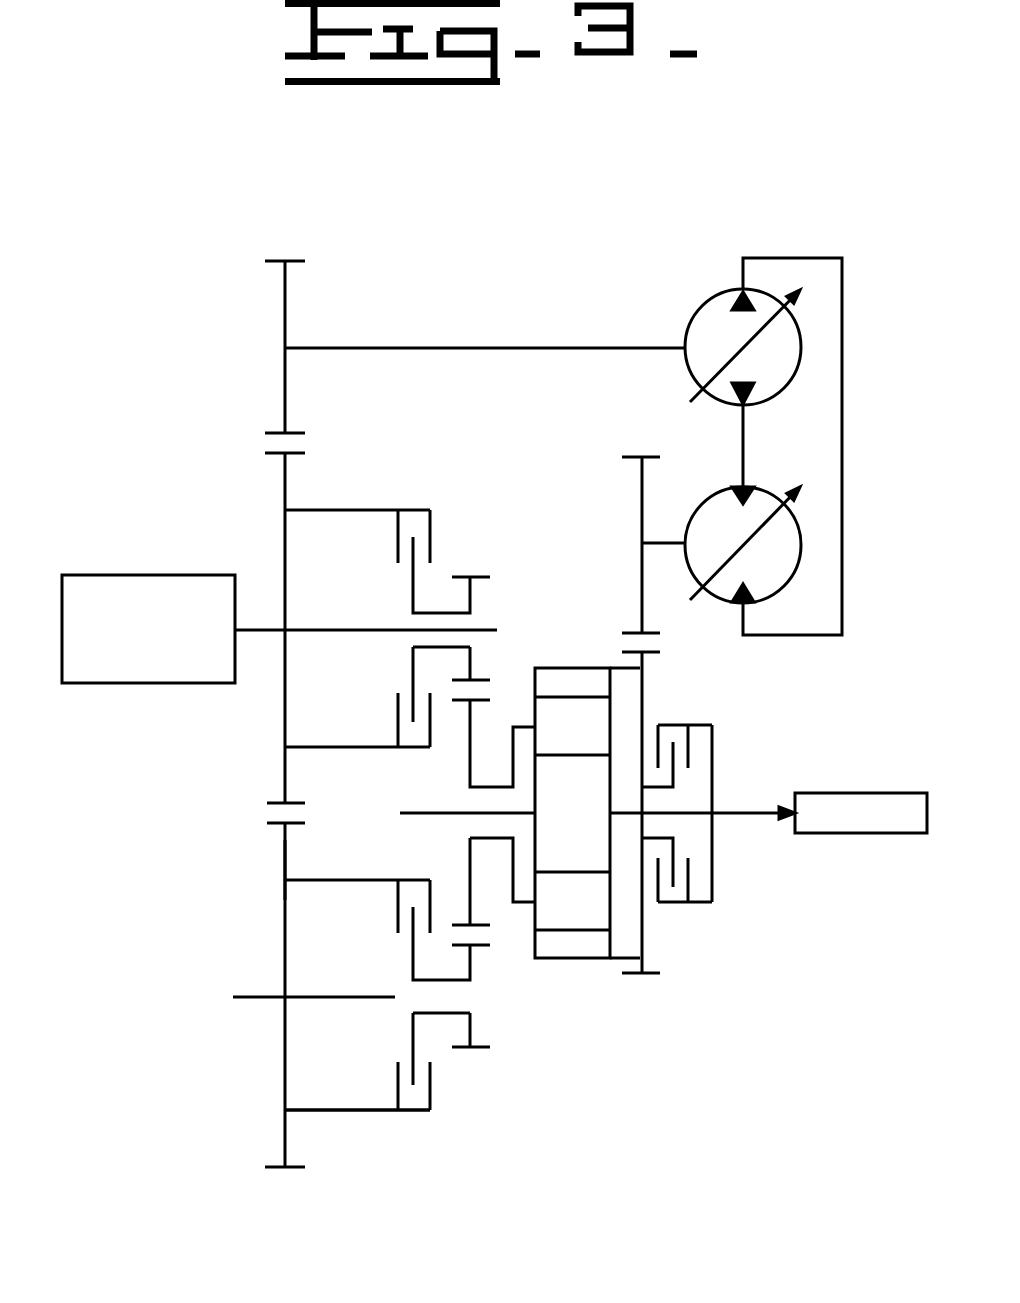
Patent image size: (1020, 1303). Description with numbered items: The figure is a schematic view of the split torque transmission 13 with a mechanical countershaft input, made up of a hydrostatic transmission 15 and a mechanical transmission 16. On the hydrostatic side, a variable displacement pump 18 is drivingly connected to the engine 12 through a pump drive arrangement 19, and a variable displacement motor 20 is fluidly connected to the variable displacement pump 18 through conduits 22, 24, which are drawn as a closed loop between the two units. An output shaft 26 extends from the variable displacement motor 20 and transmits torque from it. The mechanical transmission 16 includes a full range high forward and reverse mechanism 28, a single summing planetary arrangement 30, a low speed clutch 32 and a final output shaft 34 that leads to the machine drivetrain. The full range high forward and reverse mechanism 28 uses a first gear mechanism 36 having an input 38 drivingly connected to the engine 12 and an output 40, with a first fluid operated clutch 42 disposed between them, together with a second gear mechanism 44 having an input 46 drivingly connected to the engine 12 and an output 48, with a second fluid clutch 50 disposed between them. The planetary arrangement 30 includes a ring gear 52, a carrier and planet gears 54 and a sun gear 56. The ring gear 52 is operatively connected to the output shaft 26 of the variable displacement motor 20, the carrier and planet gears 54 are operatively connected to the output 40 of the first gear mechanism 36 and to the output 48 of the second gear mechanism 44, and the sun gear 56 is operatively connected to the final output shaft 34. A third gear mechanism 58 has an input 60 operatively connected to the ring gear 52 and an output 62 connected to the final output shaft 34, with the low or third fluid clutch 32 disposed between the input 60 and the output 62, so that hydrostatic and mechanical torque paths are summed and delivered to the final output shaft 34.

The engine 12 is at (143, 580).
The split torque transmission 13 is at (775, 373).
The hydrostatic transmission 15 is at (611, 499).
The mechanical transmission 16 is at (556, 1130).
The variable displacement pump 18 is at (697, 310).
The pump drive arrangement 19 is at (246, 416).
The variable displacement motor 20 is at (785, 588).
The conduit 22 is at (745, 452).
The conduit 24 is at (842, 378).
The output shaft 26 is at (668, 543).
The full range high forward and reverse mechanism 28 is at (217, 864).
The summing planetary arrangement 30 is at (587, 861).
The low speed clutch 32 is at (707, 785).
The final output shaft 34 is at (750, 815).
The first gear mechanism 36 is at (417, 596).
The input 38 is at (288, 548).
The output 40 is at (473, 593).
The first fluid operated clutch 42 is at (428, 510).
The second gear mechanism 44 is at (417, 1012).
The input 46 is at (288, 952).
The output 48 is at (477, 962).
The second fluid clutch 50 is at (430, 1110).
The ring gear 52 is at (572, 681).
The carrier and planet gears 54 is at (572, 731).
The sun gear 56 is at (572, 864).
The third gear mechanism 58 is at (687, 993).
The input 60 is at (643, 673).
The output 62 is at (717, 778).